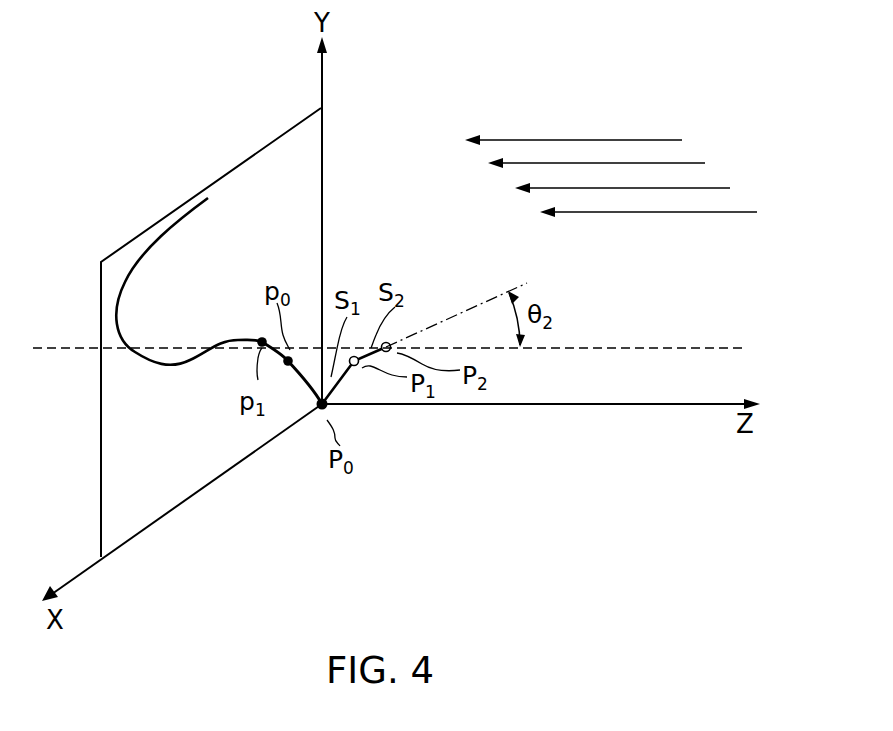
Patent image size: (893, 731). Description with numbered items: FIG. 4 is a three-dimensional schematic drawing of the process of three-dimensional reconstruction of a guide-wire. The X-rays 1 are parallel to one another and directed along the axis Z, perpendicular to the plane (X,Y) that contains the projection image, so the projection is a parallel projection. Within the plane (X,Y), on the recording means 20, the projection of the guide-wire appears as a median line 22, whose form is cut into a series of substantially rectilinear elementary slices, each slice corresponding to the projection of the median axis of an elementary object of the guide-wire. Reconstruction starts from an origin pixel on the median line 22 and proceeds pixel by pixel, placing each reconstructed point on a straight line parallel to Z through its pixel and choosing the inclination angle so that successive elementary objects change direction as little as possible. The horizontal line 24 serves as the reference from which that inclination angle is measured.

The X-rays 1 is at (775, 137).
The recording means 20 is at (297, 222).
The median line of the projection 22 is at (163, 237).
The horizontal reference line 24 is at (595, 346).